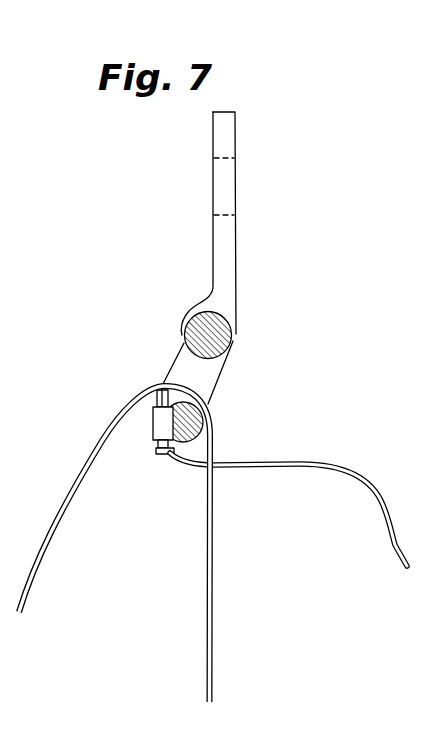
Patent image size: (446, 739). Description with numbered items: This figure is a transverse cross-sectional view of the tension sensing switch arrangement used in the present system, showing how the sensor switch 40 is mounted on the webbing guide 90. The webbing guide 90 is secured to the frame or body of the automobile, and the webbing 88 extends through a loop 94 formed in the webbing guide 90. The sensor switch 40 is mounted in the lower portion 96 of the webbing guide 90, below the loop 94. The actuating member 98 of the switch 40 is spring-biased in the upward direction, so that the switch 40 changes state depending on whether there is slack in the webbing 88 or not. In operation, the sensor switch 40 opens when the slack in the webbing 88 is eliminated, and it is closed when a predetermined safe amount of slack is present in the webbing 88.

The sensor switch 40 is at (162, 425).
The webbing 88 is at (47, 543).
The webbing guide 90 is at (228, 132).
The loop 94 is at (208, 373).
The lower portion 96 is at (197, 423).
The actuating member 98 is at (158, 398).